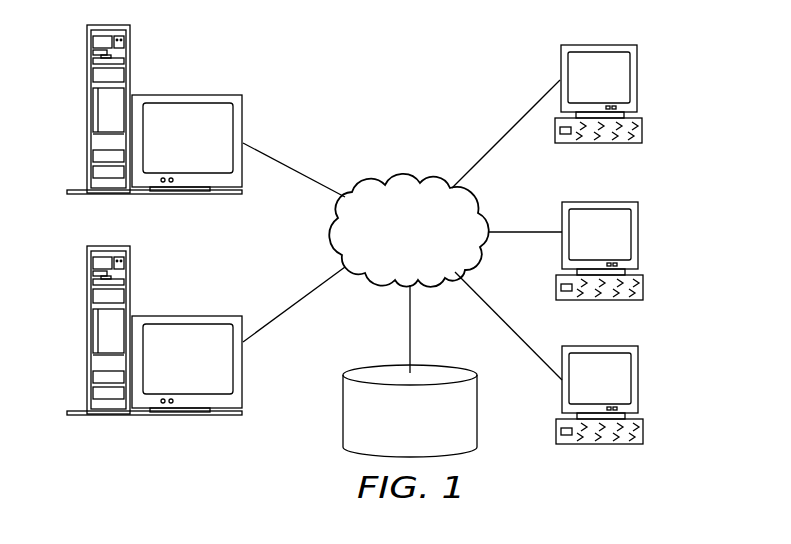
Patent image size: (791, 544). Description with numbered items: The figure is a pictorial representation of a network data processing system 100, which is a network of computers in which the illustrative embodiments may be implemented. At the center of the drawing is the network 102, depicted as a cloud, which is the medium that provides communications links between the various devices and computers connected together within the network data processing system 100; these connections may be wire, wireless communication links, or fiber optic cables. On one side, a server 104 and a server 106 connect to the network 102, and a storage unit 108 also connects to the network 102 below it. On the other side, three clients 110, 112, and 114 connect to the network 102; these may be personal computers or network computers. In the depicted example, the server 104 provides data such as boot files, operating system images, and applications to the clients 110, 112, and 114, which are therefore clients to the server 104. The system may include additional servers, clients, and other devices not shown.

The network data processing system 100 is at (464, 66).
The network 102 is at (380, 180).
The server 104 is at (84, 110).
The server 106 is at (84, 332).
The storage unit 108 is at (343, 420).
The client 110 is at (637, 80).
The client 112 is at (637, 232).
The client 114 is at (637, 380).